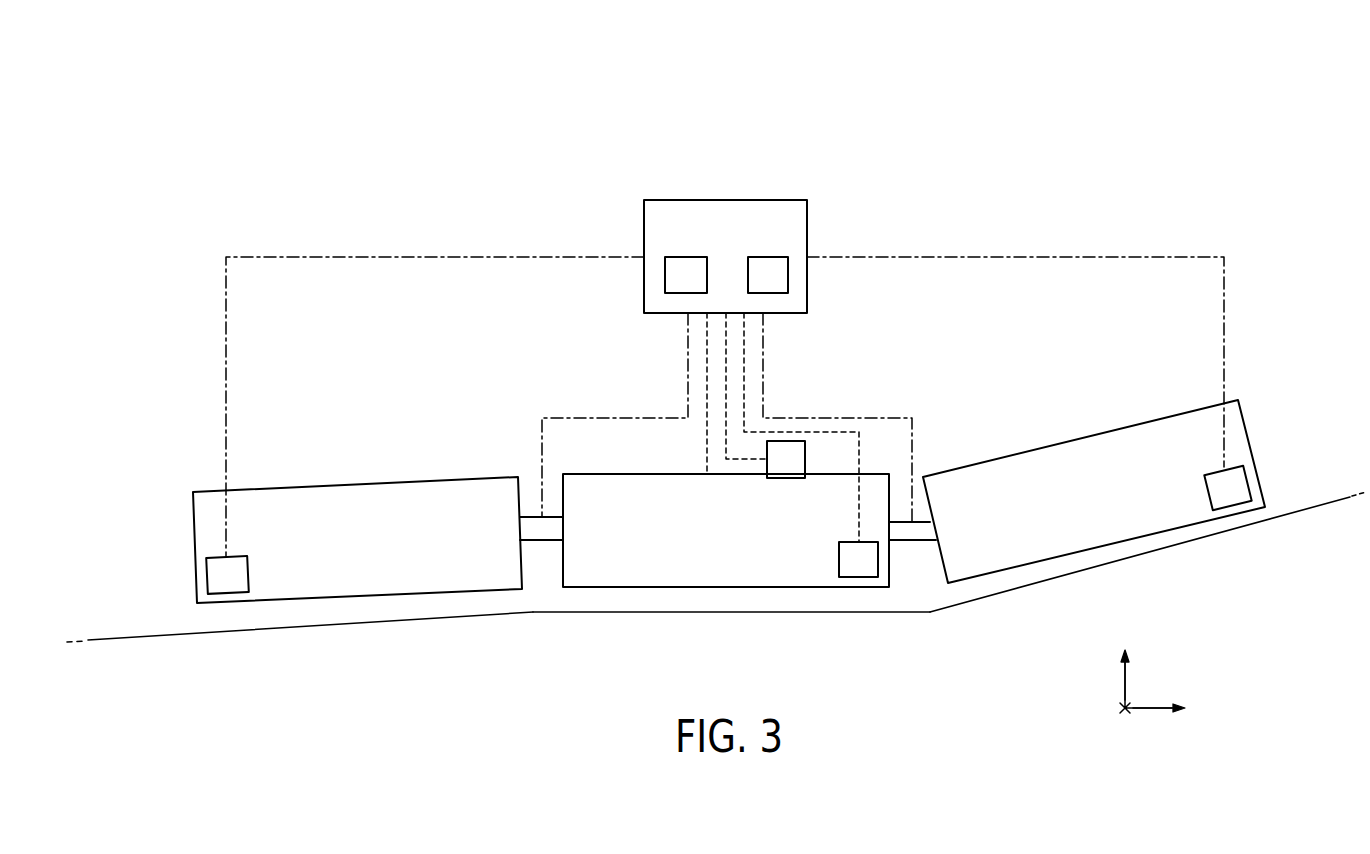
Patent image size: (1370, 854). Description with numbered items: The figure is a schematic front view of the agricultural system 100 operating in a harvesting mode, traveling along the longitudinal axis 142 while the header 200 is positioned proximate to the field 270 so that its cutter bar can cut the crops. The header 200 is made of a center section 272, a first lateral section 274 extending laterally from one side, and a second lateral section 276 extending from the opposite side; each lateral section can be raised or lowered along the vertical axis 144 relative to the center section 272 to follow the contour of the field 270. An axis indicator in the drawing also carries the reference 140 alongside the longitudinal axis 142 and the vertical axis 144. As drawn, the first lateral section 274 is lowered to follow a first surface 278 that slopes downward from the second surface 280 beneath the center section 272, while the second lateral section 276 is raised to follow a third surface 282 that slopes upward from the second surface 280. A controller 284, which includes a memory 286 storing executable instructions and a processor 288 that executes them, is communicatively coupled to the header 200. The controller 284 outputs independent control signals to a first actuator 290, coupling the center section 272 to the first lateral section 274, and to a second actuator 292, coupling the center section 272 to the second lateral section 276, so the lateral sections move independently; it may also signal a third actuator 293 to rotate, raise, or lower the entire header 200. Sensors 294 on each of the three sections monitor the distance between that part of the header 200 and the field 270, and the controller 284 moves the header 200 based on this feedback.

The agricultural system 100 is at (1250, 142).
The header 200 is at (1263, 373).
The coordinate system 140 is at (1148, 710).
The longitudinal axis 142 is at (1118, 706).
The vertical axis 144 is at (1122, 688).
The field 270 is at (626, 662).
The center section 272 is at (672, 474).
The first lateral section 274 is at (355, 484).
The second lateral section 276 is at (1080, 436).
The first surface 278 is at (318, 628).
The second surface 280 is at (743, 612).
The third surface 282 is at (1140, 553).
The controller 284 is at (735, 200).
The memory 286 is at (665, 275).
The processor 288 is at (788, 278).
The first actuator 290 is at (545, 540).
The second actuator 292 is at (912, 543).
The third actuator 293 is at (807, 460).
The sensors 294 is at (250, 568).